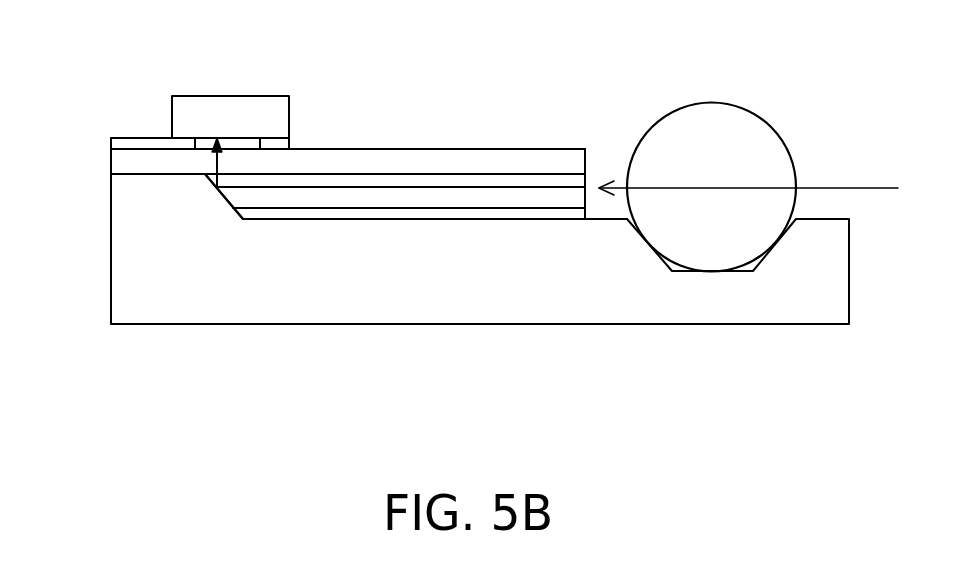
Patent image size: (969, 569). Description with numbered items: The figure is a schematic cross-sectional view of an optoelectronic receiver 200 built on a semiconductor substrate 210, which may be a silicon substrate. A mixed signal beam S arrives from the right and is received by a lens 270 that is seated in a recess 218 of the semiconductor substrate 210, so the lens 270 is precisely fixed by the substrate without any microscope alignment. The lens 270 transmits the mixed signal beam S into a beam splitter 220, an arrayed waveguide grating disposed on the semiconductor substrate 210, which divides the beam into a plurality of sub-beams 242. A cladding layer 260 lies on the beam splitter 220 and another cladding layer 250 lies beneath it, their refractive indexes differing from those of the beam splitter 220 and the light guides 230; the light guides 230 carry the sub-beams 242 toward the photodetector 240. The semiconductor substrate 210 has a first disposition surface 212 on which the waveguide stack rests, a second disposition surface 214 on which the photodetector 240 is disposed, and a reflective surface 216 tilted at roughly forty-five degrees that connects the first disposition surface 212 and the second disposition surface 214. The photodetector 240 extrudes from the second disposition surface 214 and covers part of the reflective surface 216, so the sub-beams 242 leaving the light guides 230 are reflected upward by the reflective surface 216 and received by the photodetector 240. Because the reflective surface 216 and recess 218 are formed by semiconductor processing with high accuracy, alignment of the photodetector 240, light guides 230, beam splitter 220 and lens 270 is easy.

The optoelectronic receiver 200 is at (852, 391).
The semiconductor substrate 210 is at (528, 308).
The first disposition surface 212 is at (460, 208).
The second disposition surface 214 is at (128, 160).
The reflective surface 216 is at (242, 200).
The recess 218 is at (661, 235).
The beam splitter 220 is at (540, 182).
The light guide 230 is at (320, 202).
The photodetector 240 is at (193, 112).
The sub-beam 242 is at (227, 187).
The cladding layer 250 is at (388, 213).
The cladding layer 260 is at (453, 162).
The lens 270 is at (713, 133).
The mixed signal beam S is at (598, 180).